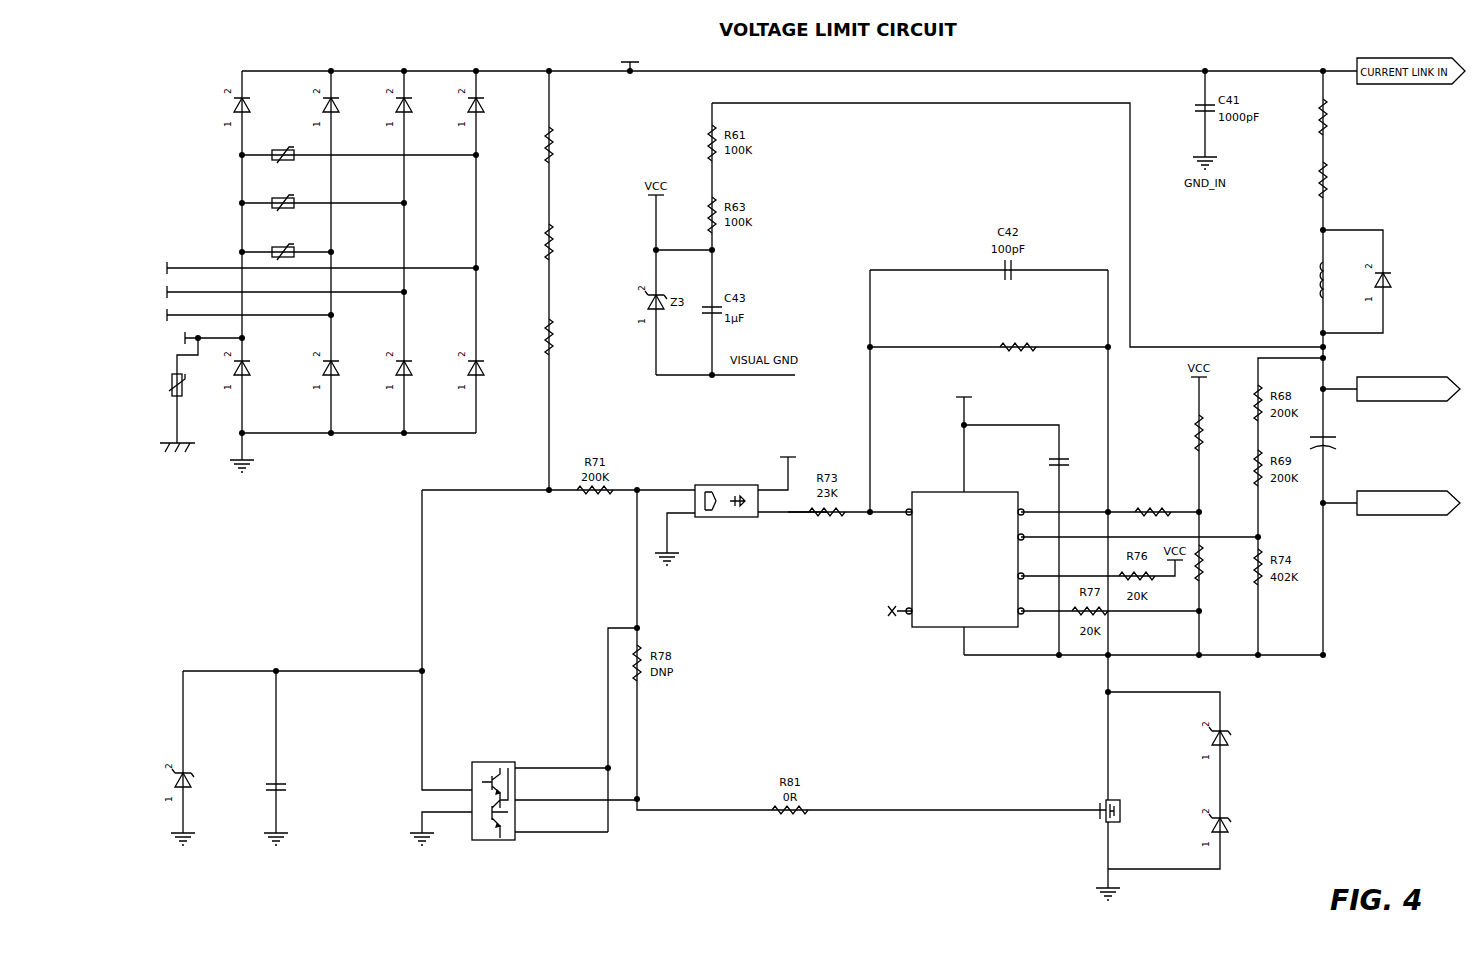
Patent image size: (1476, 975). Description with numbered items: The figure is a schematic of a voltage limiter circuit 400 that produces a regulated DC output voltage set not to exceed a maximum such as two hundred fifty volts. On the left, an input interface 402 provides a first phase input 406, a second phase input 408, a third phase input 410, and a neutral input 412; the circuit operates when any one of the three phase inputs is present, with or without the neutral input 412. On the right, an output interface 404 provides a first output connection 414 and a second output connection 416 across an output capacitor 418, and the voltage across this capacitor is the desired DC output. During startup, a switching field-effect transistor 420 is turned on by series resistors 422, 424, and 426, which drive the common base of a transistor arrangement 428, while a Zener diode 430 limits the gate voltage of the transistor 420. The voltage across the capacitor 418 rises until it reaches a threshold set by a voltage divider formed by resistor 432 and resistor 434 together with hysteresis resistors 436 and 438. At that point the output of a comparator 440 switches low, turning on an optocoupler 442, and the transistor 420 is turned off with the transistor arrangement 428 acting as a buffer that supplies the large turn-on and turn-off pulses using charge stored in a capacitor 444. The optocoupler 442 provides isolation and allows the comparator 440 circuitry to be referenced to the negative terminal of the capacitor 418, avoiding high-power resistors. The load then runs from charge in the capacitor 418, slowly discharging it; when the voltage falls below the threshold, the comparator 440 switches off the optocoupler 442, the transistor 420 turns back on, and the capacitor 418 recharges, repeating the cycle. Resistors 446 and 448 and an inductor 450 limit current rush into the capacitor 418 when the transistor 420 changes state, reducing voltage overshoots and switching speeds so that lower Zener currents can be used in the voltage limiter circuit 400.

The voltage limiter circuit 400 is at (158, 84).
The input interface 402 is at (164, 178).
The output interface 404 is at (1434, 292).
The first phase input 406 is at (166, 264).
The second phase input 408 is at (183, 290).
The third phase input 410 is at (197, 313).
The neutral input 412 is at (208, 342).
The first output connection 414 is at (1400, 376).
The second output connection 416 is at (1408, 516).
The output capacitor 418 is at (1348, 445).
The switching field-effect transistor 420 is at (1124, 806).
The series resistor 422 is at (556, 128).
The series resistor 424 is at (545, 240).
The series resistor 426 is at (552, 352).
The transistor arrangement 428 is at (505, 762).
The Zener diode 430 is at (176, 782).
The resistor 432 is at (1204, 418).
The resistor 434 is at (1203, 575).
The hysteresis resistor 436 is at (1032, 345).
The hysteresis resistor 438 is at (1138, 506).
The comparator 440 is at (932, 628).
The optocoupler 442 is at (722, 486).
The capacitor 444 is at (272, 782).
The resistor 446 is at (1316, 122).
The resistor 448 is at (1316, 186).
The inductor 450 is at (1318, 282).